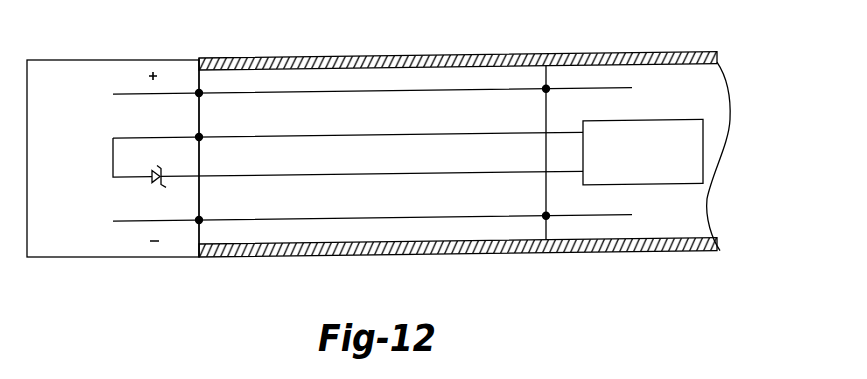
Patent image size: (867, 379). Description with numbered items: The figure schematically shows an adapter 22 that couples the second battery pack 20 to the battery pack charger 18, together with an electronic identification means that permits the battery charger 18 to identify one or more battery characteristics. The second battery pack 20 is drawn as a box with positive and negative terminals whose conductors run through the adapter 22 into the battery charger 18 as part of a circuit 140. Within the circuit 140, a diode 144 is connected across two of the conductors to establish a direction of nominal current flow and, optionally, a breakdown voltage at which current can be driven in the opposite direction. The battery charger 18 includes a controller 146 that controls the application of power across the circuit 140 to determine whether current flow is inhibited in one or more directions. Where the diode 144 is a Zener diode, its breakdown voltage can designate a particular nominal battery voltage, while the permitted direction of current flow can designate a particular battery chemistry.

The battery pack charger 18 is at (464, 133).
The second battery pack 20 is at (67, 61).
The adapter 22 is at (280, 55).
The circuit 140 is at (444, 106).
The diode 144 is at (155, 185).
The controller 146 is at (703, 152).